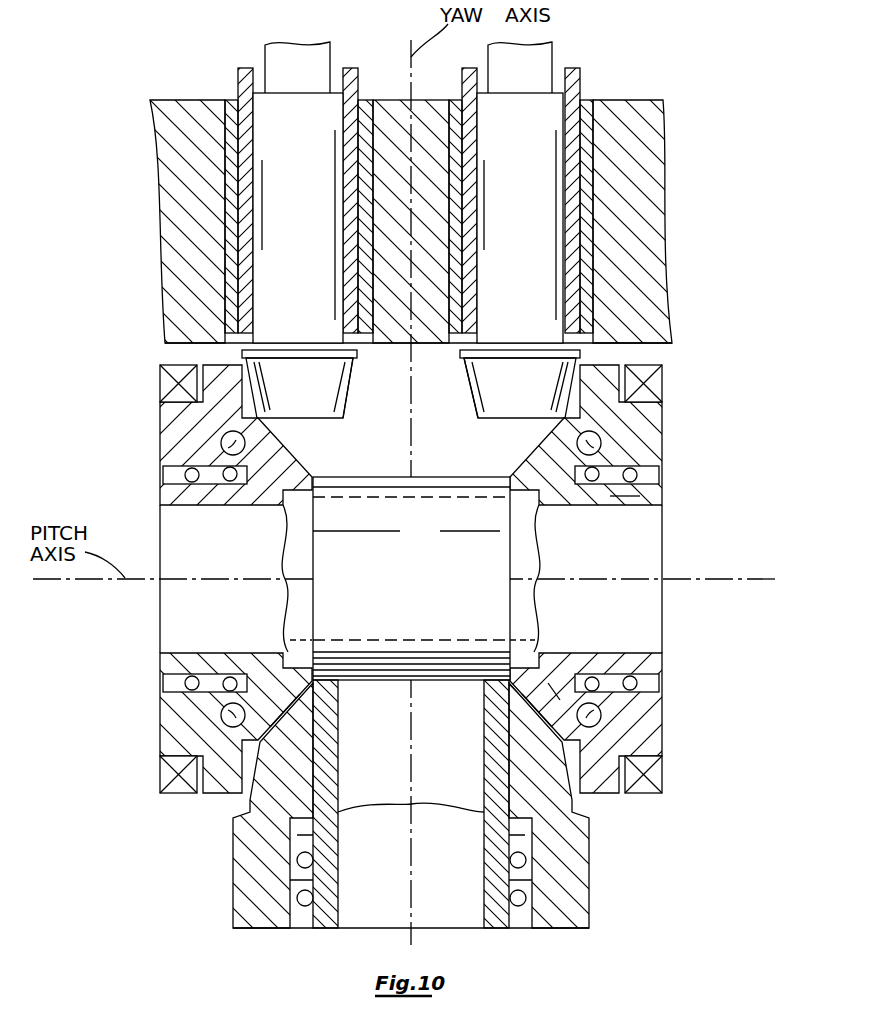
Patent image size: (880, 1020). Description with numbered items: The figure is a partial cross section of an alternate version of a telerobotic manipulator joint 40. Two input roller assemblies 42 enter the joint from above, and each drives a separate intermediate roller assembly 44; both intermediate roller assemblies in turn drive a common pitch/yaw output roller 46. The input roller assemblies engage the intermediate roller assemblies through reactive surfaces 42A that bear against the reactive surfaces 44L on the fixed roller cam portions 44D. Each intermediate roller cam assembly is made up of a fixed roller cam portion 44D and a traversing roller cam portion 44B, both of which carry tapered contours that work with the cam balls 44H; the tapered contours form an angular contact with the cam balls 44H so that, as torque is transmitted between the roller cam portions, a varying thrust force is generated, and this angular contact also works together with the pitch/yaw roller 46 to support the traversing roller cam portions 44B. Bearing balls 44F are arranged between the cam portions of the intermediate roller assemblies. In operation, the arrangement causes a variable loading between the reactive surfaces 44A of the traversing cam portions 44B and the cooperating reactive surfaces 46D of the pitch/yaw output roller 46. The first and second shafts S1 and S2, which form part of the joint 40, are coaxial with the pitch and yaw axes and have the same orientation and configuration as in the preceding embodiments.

The telerobotic manipulator joint 40 is at (672, 188).
The input roller assembly 42 is at (312, 189).
The reactive surface of input roller assembly 42A is at (470, 378).
The intermediate roller assembly 44 is at (640, 440).
The reactive surface of traversing cam portion 44A is at (288, 708).
The traversing roller cam portion 44B is at (556, 690).
The fixed roller cam portion 44D is at (215, 392).
The thrust bearing balls 44F is at (185, 477).
The cam balls 44H is at (221, 444).
The reactive surface of fixed roller cam portion 44L is at (250, 384).
The pitch/yaw output roller 46 is at (592, 858).
The reactive surface of pitch/yaw output roller 46D is at (295, 672).
The first shaft S1 is at (620, 498).
The second shaft S2 is at (488, 865).